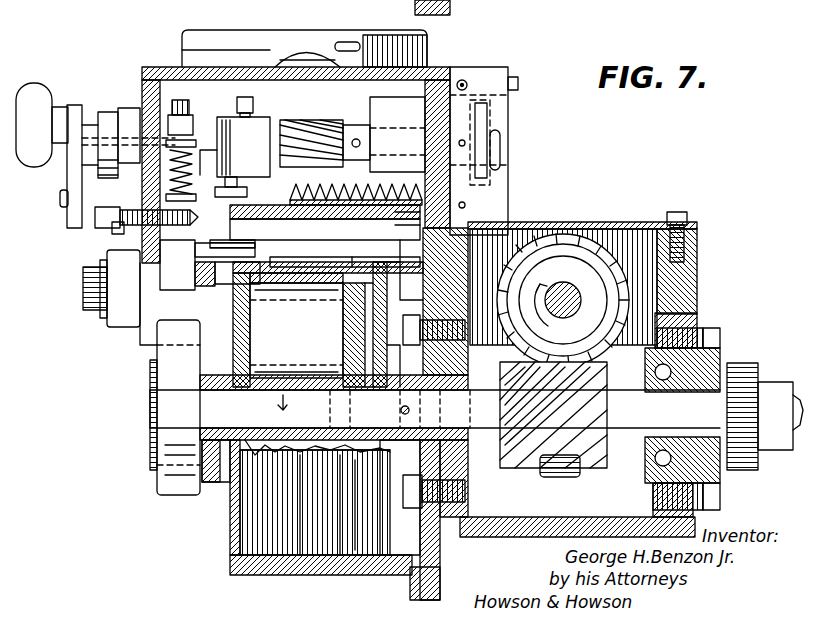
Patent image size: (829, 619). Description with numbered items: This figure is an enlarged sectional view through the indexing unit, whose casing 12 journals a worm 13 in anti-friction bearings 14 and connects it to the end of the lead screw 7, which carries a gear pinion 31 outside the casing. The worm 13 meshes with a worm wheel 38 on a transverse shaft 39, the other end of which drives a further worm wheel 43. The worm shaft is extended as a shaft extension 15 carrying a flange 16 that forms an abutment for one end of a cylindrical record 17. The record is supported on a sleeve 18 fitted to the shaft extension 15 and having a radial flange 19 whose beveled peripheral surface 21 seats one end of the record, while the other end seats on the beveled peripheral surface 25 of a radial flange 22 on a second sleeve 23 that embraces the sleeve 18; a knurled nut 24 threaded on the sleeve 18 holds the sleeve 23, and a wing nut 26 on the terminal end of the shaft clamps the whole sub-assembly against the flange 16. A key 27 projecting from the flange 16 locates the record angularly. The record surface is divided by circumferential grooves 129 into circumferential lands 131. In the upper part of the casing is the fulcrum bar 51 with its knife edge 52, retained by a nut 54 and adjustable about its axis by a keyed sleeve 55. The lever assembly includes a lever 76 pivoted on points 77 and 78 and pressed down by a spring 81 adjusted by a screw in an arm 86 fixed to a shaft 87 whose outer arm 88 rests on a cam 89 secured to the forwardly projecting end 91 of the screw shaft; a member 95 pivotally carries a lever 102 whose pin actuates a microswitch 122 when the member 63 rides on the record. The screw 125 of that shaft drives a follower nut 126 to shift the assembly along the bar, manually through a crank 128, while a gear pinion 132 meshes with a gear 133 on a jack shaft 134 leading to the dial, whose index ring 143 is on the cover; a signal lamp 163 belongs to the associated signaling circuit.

The lead screw 7 is at (798, 400).
The casing 12 is at (228, 573).
The worm 13 is at (530, 462).
The anti-friction bearings 14 is at (462, 445).
The shaft extension 15 is at (345, 418).
The flange 16 is at (383, 552).
The cylindrical record 17 is at (303, 552).
The sleeve 18 is at (352, 335).
The radial flange 19 is at (345, 314).
The peripheral surface 21 is at (362, 268).
The radial flange 22 is at (236, 313).
The second sleeve 23 is at (275, 372).
The nut 24 is at (212, 486).
The peripheral surface 25 is at (238, 286).
The wing nut 26 is at (163, 438).
The key 27 is at (380, 270).
The gear pinion 31 is at (742, 365).
The worm wheel 38 is at (570, 226).
The transverse shaft 39 is at (575, 302).
The worm wheel 43 is at (562, 480).
The bar 51 is at (82, 289).
The knife edge 52 is at (300, 262).
The retaining nut 54 is at (90, 310).
The sleeve 55 is at (118, 315).
The member 63 is at (210, 262).
The lever 76 is at (345, 210).
The point 77 is at (395, 222).
The point 78 is at (112, 230).
The spring 81 is at (218, 157).
The arm 86 is at (192, 125).
The shaft 87 is at (132, 118).
The arm 88 is at (105, 120).
The cam 89 is at (95, 213).
The forwardly projecting end 91 is at (62, 194).
The member 95 is at (205, 247).
The lever 102 is at (200, 282).
The microswitch 122 is at (243, 137).
The screw 125 is at (362, 183).
The follower nut 126 is at (312, 160).
The crank 128 is at (72, 103).
The circumferential grooves 129 is at (252, 534).
The circumferential lands 131 is at (345, 552).
The gear pinion 132 is at (490, 188).
The gear 133 is at (490, 110).
The jack shaft 134 is at (392, 125).
The ring 143 is at (217, 40).
The signal lamp 163 is at (305, 45).